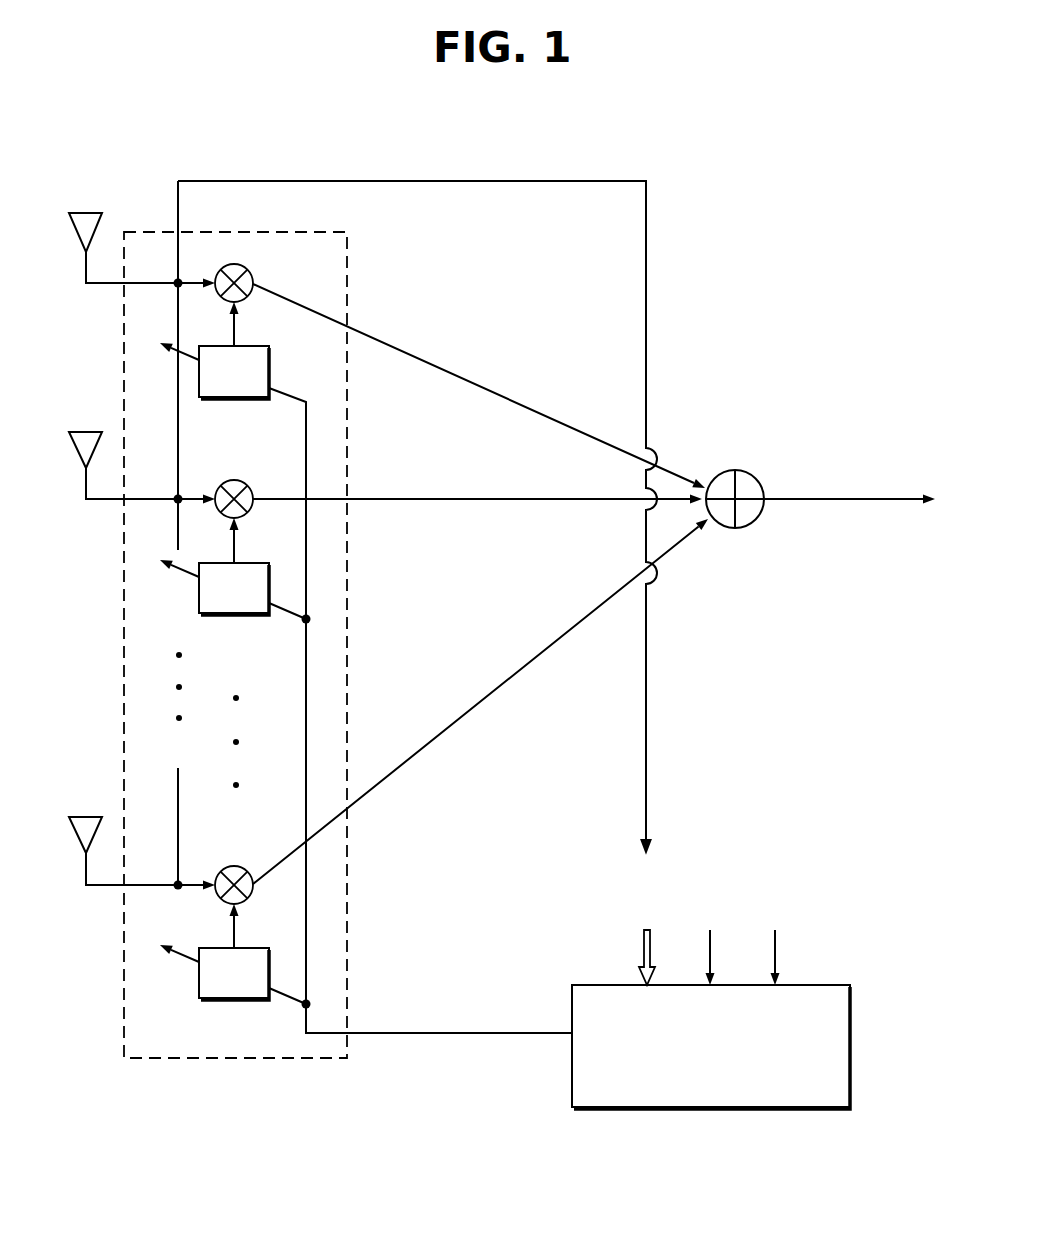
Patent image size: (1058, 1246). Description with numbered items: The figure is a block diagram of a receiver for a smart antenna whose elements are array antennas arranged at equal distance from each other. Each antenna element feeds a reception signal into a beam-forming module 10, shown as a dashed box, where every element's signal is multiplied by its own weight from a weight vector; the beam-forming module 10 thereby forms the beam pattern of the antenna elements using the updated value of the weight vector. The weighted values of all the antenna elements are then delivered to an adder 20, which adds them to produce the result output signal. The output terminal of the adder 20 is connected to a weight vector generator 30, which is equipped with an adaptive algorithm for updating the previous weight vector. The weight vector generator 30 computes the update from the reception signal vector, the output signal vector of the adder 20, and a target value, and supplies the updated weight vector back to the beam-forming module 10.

The beam-forming module 10 is at (315, 1050).
The adder 20 is at (748, 478).
The weight vector generator 30 is at (829, 997).